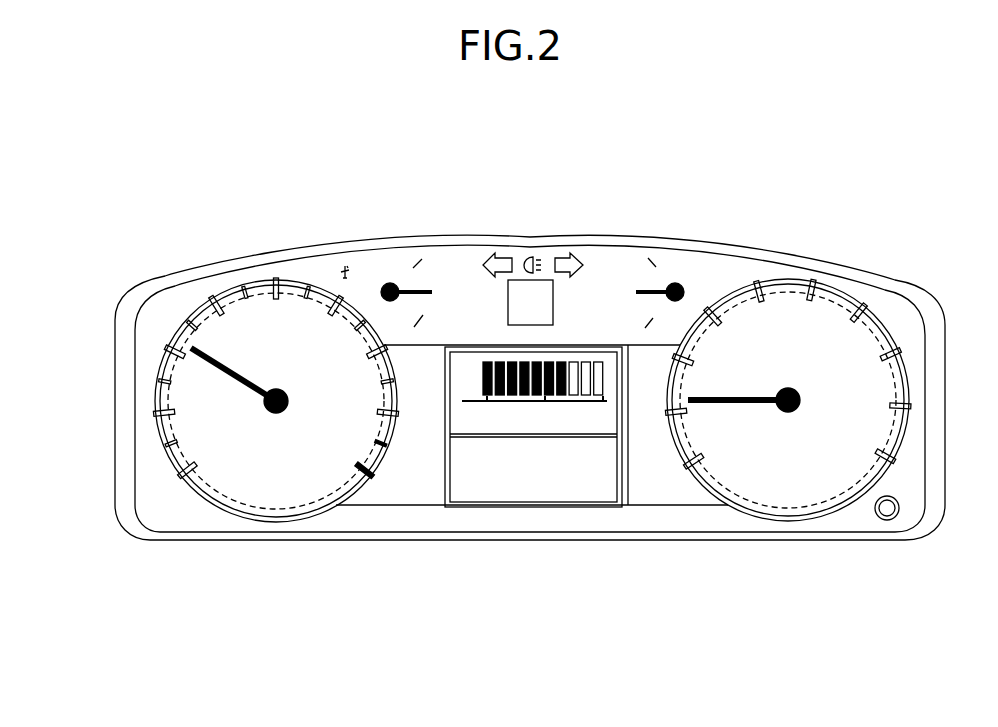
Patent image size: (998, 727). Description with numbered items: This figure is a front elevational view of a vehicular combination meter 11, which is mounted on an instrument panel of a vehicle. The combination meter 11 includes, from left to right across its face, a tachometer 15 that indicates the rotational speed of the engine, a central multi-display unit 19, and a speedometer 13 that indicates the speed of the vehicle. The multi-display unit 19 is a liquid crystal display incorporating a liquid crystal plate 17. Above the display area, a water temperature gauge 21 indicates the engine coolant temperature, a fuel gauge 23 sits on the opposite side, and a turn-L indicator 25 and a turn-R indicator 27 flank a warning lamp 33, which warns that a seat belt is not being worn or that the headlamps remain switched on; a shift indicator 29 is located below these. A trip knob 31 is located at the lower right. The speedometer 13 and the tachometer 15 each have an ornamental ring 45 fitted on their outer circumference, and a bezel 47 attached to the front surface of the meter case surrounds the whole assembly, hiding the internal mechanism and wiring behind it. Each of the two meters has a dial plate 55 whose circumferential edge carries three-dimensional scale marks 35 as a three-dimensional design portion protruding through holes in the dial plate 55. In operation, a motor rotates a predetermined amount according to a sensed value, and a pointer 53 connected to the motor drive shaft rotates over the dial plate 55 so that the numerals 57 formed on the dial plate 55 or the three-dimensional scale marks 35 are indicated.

The vehicular combination meter 11 is at (262, 195).
The speedometer 13 is at (753, 268).
The tachometer 15 is at (245, 270).
The liquid crystal plate 17 is at (506, 492).
The multi-display unit 19 is at (598, 512).
The water temperature gauge 21 is at (430, 265).
The fuel gauge 23 is at (619, 262).
The turn-L indicator 25 is at (505, 240).
The turn-R indicator 27 is at (567, 240).
The shift indicator 29 is at (500, 305).
The trip knob 31 is at (877, 530).
The warning lamp 33 is at (346, 252).
The three-dimensional scale marks 35 is at (296, 290).
The ornamental ring 45 is at (190, 482).
The bezel 47 is at (730, 541).
The pointer 53 is at (250, 380).
The dial plate 55 is at (418, 483).
The numerals 57 is at (156, 390).